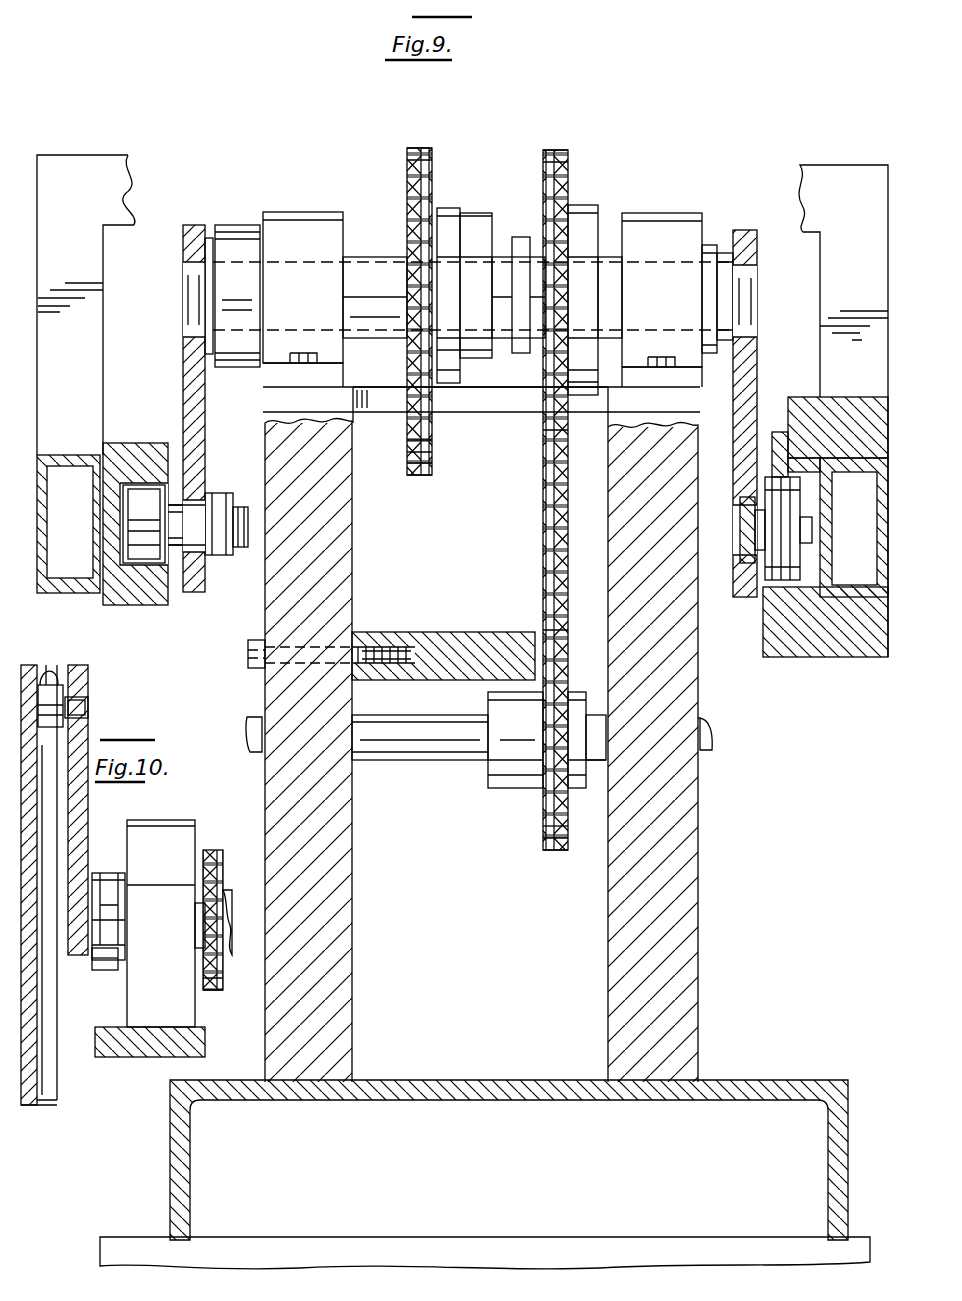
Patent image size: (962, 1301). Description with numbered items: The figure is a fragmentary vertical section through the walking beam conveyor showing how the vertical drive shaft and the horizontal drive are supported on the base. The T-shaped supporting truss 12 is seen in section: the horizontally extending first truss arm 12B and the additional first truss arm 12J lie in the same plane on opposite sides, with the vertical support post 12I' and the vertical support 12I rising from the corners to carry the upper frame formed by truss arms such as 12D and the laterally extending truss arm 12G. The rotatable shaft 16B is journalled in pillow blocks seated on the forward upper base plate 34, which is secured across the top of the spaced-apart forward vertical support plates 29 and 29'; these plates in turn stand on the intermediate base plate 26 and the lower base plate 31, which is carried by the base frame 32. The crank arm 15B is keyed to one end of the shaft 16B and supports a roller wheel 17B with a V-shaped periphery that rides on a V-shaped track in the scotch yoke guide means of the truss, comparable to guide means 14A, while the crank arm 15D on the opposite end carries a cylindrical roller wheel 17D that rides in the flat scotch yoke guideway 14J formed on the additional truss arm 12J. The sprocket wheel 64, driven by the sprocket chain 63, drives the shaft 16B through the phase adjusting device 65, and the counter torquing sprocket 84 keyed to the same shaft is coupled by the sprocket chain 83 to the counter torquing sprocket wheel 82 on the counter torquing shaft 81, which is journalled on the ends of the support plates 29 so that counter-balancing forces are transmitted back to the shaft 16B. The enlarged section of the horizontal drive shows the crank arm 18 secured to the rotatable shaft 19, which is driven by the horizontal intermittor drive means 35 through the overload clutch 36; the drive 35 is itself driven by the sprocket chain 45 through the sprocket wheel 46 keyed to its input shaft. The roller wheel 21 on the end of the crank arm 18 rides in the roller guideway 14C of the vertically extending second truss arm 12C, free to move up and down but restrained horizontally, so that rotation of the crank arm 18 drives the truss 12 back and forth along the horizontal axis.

In FIG. 9, the T-shaped supporting truss 12 is at (119, 144).
In FIG. 9, the laterally extending truss arm 12G is at (126, 188).
In FIG. 9, the vertically extending support post 12I' is at (96, 282).
In FIG. 9, the additional first truss arm 12J is at (68, 460).
In FIG. 9, the scotch yoke guideway 14J is at (147, 492).
In FIG. 9, the cylindrical roller wheel 17D is at (143, 562).
In FIG. 9, the crank arm 15D is at (193, 353).
In FIG. 9, the rotatable shaft 16B is at (387, 268).
In FIG. 9, the sprocket wheel 64 is at (418, 150).
In FIG. 9, the sprocket chain 63 is at (432, 476).
In FIG. 9, the phase adjusting device 65 is at (479, 210).
In FIG. 9, the counter torquing sprocket 84 is at (555, 153).
In FIG. 9, the sprocket chain 83 is at (543, 522).
In FIG. 9, the counter torquing sprocket wheel 82 is at (548, 850).
In FIG. 9, the crank arm 15B is at (750, 350).
In FIG. 9, the truss arm 12D is at (813, 178).
In FIG. 9, the vertical support post 12I is at (828, 302).
In FIG. 9, the scotch yoke guide means 14A is at (800, 468).
In FIG. 9, the first truss arm 12B is at (856, 462).
In FIG. 9, the roller wheel 17B is at (752, 580).
In FIG. 9, the forward vertical support plate 29' is at (332, 750).
In FIG. 9, the forward vertical support plates 29 is at (627, 752).
In FIG. 9, the forward upper base plate 34 is at (448, 398).
In FIG. 9, the intermediate base plate 26 is at (414, 637).
In FIG. 10, the intermediate base plate 26 is at (107, 1050).
In FIG. 9, the counter torquing shaft 81 is at (392, 753).
In FIG. 9, the lower base plate 31 is at (746, 1082).
In FIG. 9, the base frame 32 is at (706, 1242).
In FIG. 10, the second truss arm 12C is at (47, 1100).
In FIG. 10, the roller guideway 14C is at (43, 683).
In FIG. 10, the roller wheel 21 is at (88, 701).
In FIG. 10, the crank arm 18 is at (80, 796).
In FIG. 10, the horizontal intermittor drive means 35 is at (170, 822).
In FIG. 10, the overload clutch 36 is at (108, 971).
In FIG. 10, the rotatable shaft 19 is at (198, 922).
In FIG. 10, the sprocket wheel 46 is at (216, 903).
In FIG. 10, the sprocket chain 45 is at (222, 991).